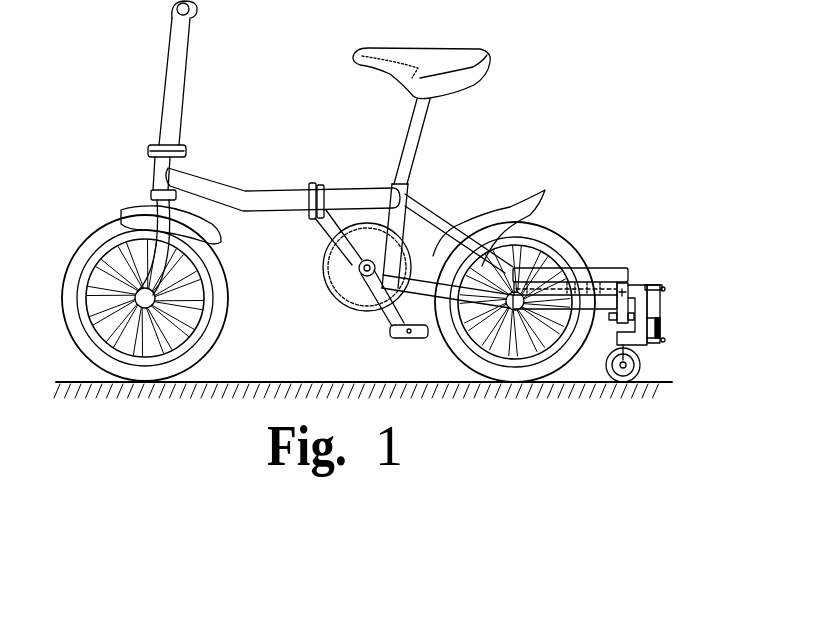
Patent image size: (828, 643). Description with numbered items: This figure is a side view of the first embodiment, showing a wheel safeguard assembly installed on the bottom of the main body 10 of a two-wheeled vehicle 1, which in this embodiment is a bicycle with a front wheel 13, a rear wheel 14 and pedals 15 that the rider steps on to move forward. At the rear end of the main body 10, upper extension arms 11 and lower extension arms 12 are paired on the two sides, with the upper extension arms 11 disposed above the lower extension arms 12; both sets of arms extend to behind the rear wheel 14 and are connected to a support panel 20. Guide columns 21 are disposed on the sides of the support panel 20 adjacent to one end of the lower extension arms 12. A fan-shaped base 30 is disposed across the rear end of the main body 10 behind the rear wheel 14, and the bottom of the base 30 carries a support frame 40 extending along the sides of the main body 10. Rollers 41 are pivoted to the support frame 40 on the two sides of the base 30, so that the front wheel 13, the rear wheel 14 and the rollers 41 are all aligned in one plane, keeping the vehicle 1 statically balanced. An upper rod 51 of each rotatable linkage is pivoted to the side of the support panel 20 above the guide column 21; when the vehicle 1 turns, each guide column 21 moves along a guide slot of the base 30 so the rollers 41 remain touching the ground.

The two-wheeled vehicle 1 is at (136, 113).
The main body 10 is at (292, 196).
The upper extension arms 11 is at (602, 273).
The lower extension arms 12 is at (568, 283).
The front wheel 13 is at (88, 242).
The rear wheel 14 is at (548, 228).
The pedals 15 is at (399, 335).
The support panel 20 is at (630, 269).
The guide column 21 is at (661, 308).
The base 30 is at (661, 331).
The support frame 40 is at (631, 347).
The rollers 41 is at (650, 391).
The upper rod 51 is at (658, 287).